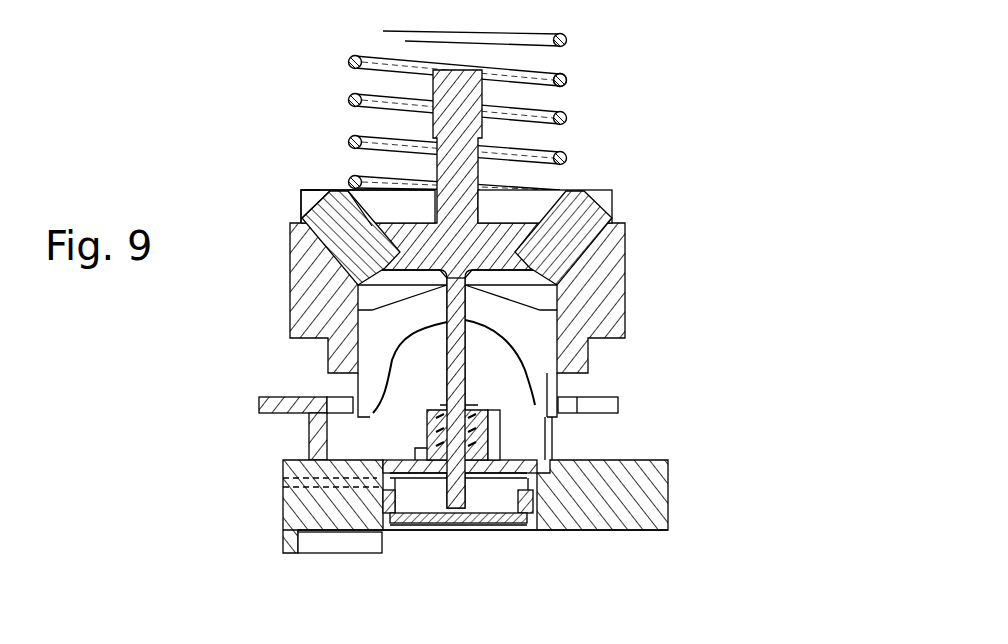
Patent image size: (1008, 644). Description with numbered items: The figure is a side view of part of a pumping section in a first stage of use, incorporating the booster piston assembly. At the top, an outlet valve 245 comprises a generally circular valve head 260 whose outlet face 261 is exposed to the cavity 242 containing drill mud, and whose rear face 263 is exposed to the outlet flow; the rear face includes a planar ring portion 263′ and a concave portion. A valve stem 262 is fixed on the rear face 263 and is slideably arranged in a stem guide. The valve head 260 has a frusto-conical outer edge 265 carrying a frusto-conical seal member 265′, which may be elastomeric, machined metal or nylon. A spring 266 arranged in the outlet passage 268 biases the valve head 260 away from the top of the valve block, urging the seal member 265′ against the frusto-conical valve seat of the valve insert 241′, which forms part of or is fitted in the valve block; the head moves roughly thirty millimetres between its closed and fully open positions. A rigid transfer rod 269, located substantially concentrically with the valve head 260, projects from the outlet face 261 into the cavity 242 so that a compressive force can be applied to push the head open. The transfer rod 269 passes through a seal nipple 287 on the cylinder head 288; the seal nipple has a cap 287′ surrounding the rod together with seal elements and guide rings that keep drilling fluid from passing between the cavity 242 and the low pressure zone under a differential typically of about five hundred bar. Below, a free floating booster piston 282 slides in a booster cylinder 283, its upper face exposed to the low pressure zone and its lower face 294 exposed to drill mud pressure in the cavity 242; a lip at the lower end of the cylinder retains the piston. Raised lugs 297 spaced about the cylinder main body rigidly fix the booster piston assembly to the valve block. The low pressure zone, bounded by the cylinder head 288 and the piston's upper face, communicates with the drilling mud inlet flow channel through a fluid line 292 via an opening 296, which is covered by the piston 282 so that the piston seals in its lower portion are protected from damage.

The outlet passage 268 is at (318, 75).
The spring 266 is at (567, 82).
The valve stem 262 is at (480, 135).
The rear face 263 is at (538, 192).
The planar ring portion 263′ is at (318, 197).
The valve head 260 is at (280, 197).
The frusto-conical outer edge 265 is at (358, 280).
The frusto-conical seal member 265′ is at (603, 223).
The outlet face 261 is at (515, 270).
The outlet valve 245 is at (643, 302).
The valve insert 241′ is at (624, 323).
The transfer rod 269 is at (458, 350).
The cap 287′ is at (483, 403).
The seal nipple 287 is at (487, 432).
The raised lug 297 is at (274, 413).
The cylinder head 288 is at (365, 462).
The fluid line 292 is at (290, 511).
The opening 296 is at (395, 462).
The lower face 294 is at (433, 530).
The cavity 242 is at (510, 612).
The booster piston 282 is at (472, 523).
The booster cylinder 283 is at (612, 505).